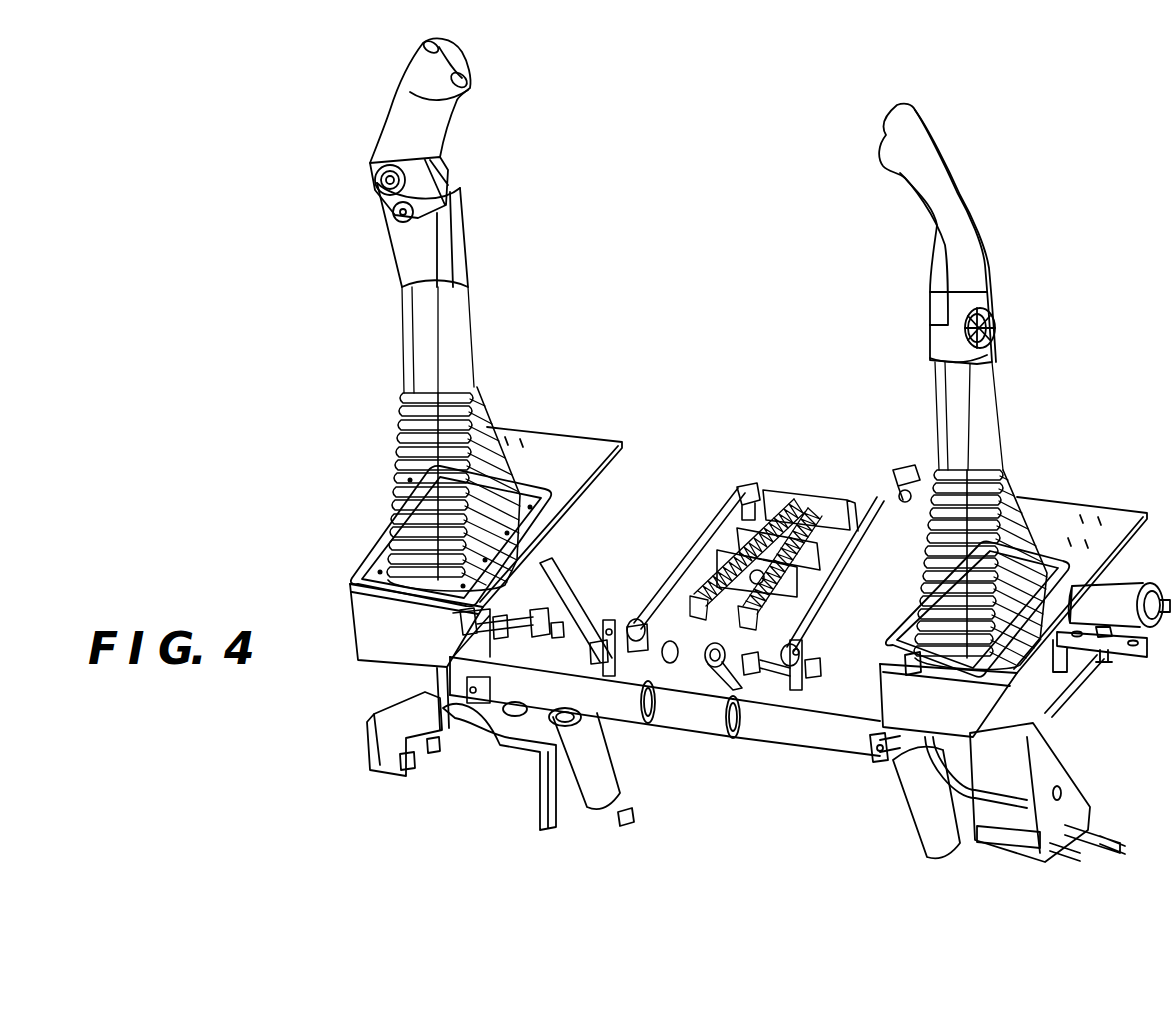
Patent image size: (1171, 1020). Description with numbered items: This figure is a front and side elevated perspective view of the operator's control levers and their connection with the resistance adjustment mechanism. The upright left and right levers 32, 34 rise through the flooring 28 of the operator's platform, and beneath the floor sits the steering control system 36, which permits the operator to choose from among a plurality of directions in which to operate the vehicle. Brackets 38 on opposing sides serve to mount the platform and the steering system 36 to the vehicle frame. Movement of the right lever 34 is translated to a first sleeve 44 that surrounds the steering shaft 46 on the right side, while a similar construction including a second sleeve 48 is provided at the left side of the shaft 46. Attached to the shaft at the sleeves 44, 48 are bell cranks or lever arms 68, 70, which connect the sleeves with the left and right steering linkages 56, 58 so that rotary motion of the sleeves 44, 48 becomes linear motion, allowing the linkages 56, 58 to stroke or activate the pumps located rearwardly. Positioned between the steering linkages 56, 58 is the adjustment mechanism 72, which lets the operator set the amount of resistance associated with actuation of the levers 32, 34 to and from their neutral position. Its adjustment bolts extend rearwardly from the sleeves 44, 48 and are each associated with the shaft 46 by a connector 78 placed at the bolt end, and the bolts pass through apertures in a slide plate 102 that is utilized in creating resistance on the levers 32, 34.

The flooring 28 is at (577, 443).
The left lever 32 is at (990, 390).
The right lever 34 is at (458, 313).
The steering control system 36 is at (688, 840).
The brackets 38 is at (390, 763).
The first sleeve 44 is at (543, 697).
The steering shaft 46 is at (718, 712).
The second sleeve 48 is at (812, 737).
The left steering linkage 56 is at (872, 520).
The right steering linkage 58 is at (700, 553).
The bell crank 68 is at (800, 655).
The bell crank 70 is at (600, 632).
The adjustment mechanism 72 is at (789, 489).
The connector 78 is at (700, 672).
The slide plate 102 is at (776, 492).